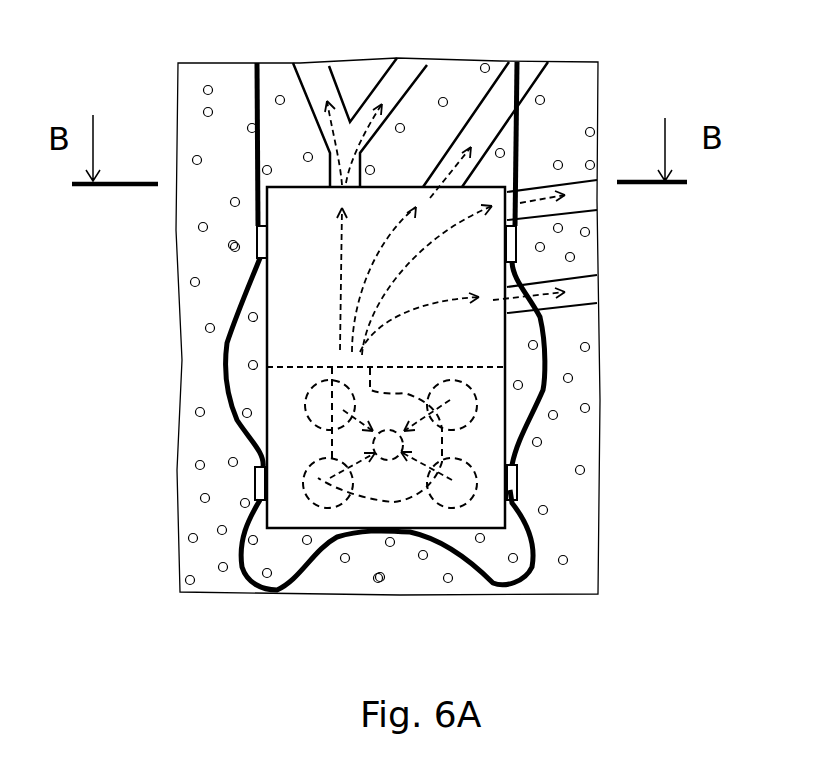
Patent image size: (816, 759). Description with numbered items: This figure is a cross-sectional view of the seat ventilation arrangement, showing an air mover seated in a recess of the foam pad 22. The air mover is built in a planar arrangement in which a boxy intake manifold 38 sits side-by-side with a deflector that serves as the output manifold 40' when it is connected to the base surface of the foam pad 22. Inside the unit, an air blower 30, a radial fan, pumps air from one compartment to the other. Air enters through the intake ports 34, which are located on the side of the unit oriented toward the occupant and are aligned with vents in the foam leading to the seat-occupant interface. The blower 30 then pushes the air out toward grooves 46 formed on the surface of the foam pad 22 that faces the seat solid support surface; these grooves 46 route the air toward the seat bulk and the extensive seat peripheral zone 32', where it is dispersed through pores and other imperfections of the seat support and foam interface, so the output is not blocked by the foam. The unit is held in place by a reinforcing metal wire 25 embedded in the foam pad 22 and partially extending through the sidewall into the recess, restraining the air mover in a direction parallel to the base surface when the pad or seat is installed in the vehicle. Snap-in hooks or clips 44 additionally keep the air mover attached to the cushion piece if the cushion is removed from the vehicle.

The foam pad 22 is at (570, 523).
The reinforcing metal wire 25 is at (550, 368).
The air blower 30 is at (382, 485).
The seat peripheral zone 32' is at (542, 280).
The intake ports 34 is at (347, 475).
The intake manifold 38 is at (280, 422).
The output manifold 40' is at (244, 279).
The clips 44 is at (260, 235).
The grooves 46 is at (528, 72).